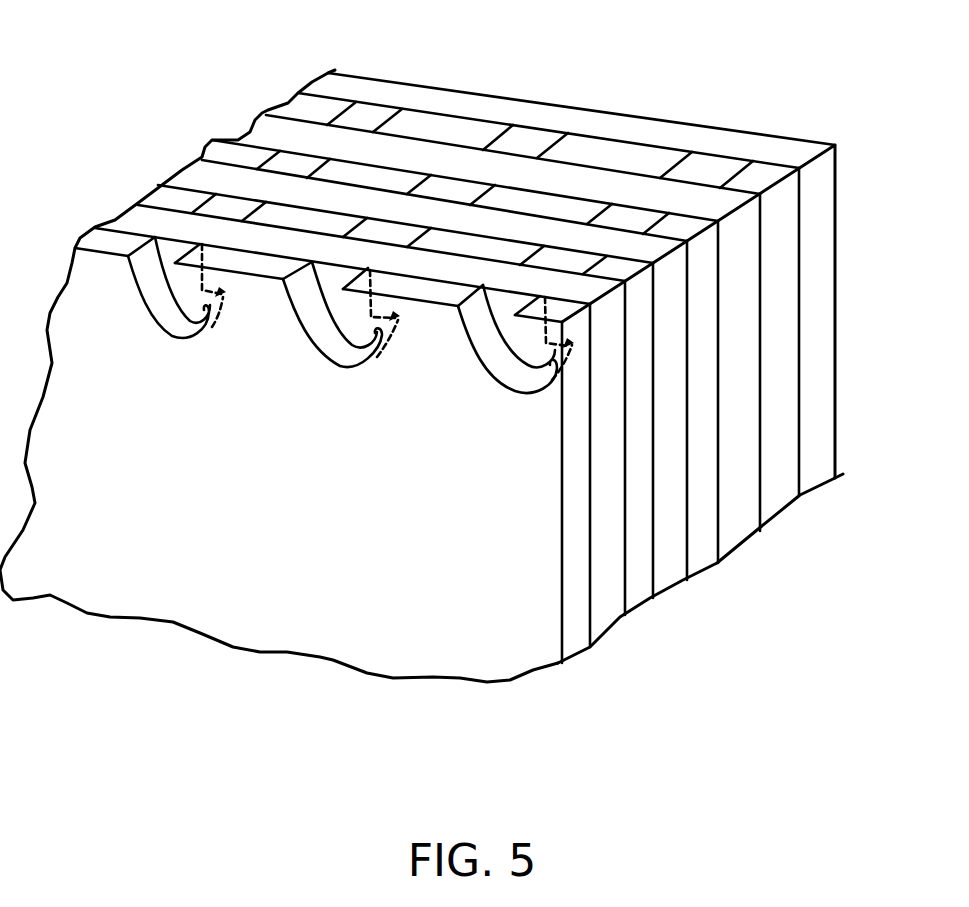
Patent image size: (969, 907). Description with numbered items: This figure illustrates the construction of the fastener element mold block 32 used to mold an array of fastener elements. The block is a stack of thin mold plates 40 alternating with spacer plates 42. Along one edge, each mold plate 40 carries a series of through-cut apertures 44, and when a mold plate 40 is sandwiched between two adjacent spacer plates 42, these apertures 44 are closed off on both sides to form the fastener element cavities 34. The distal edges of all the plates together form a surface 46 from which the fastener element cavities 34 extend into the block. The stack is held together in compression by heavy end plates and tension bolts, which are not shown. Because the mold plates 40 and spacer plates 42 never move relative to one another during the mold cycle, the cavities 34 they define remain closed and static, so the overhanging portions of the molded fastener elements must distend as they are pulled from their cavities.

The fastener element mold block 32 is at (438, 359).
The fastener element cavity 34 is at (700, 167).
The mold plate 40 is at (300, 106).
The spacer plate 42 is at (333, 72).
The through-cut aperture 44 is at (200, 330).
The surface 46 is at (97, 230).